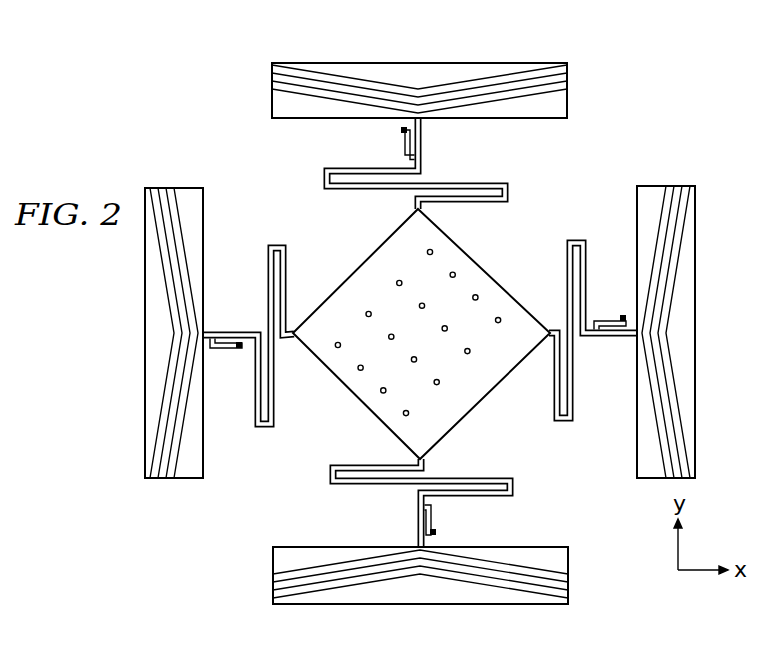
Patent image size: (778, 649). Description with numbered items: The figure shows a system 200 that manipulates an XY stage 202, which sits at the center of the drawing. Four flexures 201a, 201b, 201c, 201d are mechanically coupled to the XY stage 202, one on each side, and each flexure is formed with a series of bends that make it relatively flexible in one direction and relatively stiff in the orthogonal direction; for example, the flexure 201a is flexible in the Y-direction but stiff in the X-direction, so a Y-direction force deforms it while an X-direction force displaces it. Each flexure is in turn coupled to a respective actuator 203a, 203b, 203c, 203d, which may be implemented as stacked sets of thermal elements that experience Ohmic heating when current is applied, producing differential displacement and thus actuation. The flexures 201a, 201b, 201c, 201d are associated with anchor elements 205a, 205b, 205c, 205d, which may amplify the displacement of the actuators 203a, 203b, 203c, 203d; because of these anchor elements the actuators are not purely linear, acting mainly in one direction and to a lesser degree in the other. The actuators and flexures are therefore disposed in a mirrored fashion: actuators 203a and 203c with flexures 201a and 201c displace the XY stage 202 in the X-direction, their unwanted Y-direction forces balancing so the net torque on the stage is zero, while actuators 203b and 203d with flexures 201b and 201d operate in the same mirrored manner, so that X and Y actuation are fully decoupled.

The system 200 is at (211, 104).
The flexure 201a is at (462, 178).
The flexure 201b is at (575, 238).
The flexure 201c is at (514, 488).
The flexure 201d is at (272, 243).
The XY stage 202 is at (480, 264).
The actuator 203a is at (365, 63).
The actuator 203b is at (697, 283).
The actuator 203c is at (570, 589).
The actuator 203d is at (160, 480).
The anchor element 205a is at (402, 136).
The anchor element 205b is at (612, 320).
The anchor element 205c is at (431, 511).
The anchor element 205d is at (223, 350).